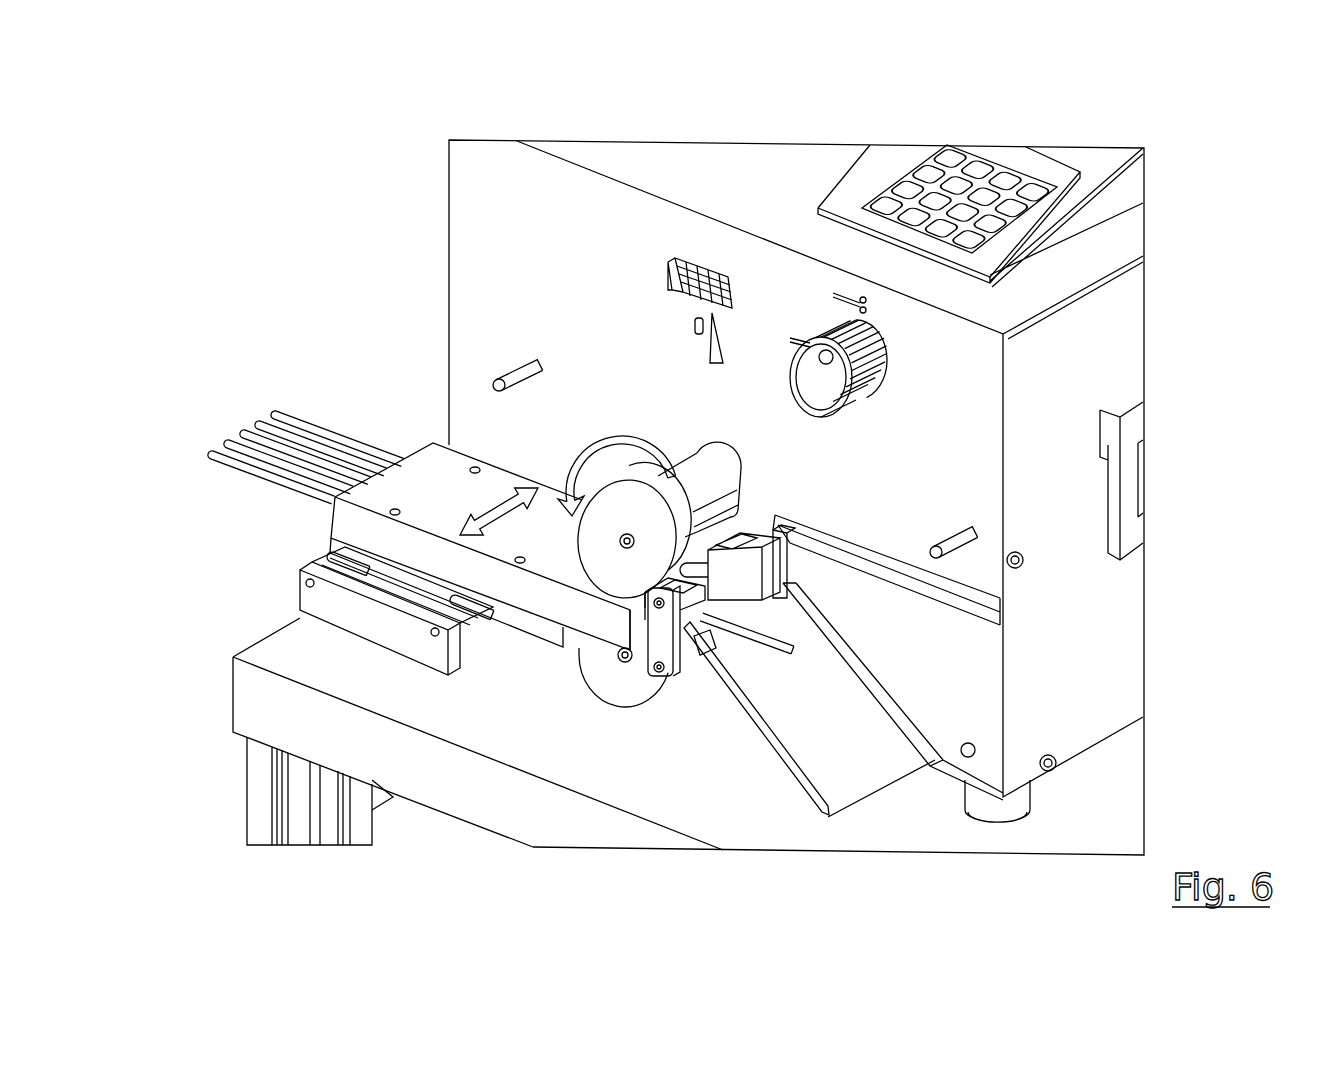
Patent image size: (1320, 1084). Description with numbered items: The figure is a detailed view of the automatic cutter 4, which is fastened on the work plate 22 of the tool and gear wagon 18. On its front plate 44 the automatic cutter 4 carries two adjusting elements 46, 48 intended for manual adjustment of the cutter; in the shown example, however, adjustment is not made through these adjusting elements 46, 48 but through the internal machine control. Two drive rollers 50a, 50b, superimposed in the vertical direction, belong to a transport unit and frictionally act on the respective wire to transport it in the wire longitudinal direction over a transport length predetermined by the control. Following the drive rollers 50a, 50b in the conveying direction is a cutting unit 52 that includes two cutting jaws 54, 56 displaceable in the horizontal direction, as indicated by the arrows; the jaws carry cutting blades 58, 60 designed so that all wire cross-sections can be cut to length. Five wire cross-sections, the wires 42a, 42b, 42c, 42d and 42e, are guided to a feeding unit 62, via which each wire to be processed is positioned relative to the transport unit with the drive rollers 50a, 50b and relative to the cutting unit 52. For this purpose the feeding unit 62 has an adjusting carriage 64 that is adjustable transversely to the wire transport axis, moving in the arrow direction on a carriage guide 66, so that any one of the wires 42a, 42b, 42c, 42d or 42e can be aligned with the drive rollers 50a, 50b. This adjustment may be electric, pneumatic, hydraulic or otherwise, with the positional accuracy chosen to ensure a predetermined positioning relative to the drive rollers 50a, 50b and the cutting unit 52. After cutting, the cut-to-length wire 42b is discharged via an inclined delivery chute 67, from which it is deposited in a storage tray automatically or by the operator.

The automatic cutter 4 is at (505, 258).
The tool and gear wagon 18 is at (236, 796).
The work plate 22 is at (285, 638).
The wire 42a is at (230, 461).
The wire 42b is at (225, 443).
The wire 42c is at (243, 436).
The wire 42d is at (255, 426).
The wire 42e is at (297, 420).
The front plate 44 is at (952, 455).
The adjusting element 46 is at (888, 360).
The adjusting element 48 is at (707, 267).
The drive roller 50a is at (642, 707).
The drive roller 50b is at (617, 503).
The cutting unit 52 is at (688, 640).
The cutting jaw 54 is at (676, 680).
The cutting jaw 56 is at (752, 542).
The cutting blade 58 is at (700, 643).
The cutting blade 60 is at (772, 645).
The feeding unit 62 is at (300, 530).
The adjusting carriage 64 is at (452, 486).
The carriage guide 66 is at (322, 556).
The delivery chute 67 is at (850, 735).